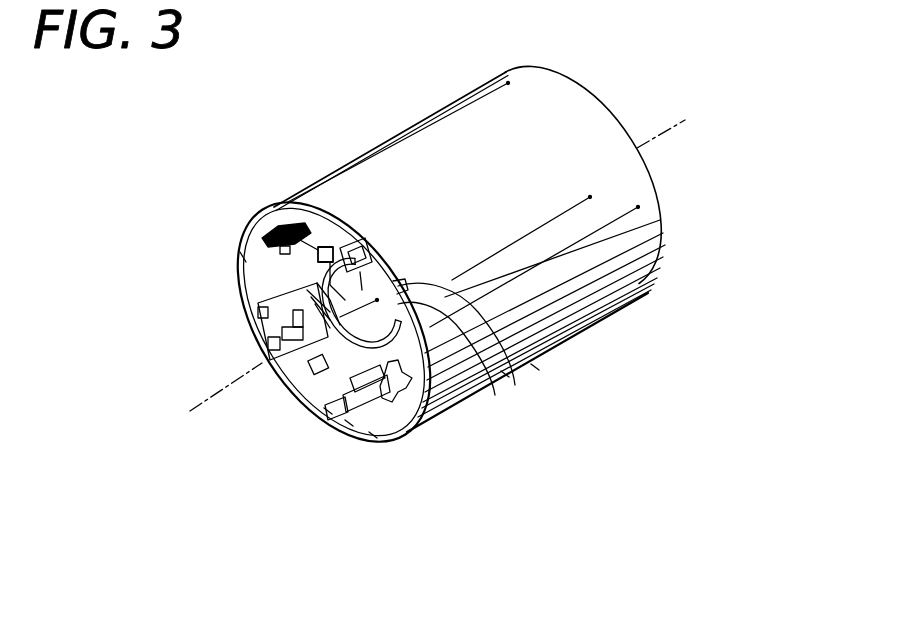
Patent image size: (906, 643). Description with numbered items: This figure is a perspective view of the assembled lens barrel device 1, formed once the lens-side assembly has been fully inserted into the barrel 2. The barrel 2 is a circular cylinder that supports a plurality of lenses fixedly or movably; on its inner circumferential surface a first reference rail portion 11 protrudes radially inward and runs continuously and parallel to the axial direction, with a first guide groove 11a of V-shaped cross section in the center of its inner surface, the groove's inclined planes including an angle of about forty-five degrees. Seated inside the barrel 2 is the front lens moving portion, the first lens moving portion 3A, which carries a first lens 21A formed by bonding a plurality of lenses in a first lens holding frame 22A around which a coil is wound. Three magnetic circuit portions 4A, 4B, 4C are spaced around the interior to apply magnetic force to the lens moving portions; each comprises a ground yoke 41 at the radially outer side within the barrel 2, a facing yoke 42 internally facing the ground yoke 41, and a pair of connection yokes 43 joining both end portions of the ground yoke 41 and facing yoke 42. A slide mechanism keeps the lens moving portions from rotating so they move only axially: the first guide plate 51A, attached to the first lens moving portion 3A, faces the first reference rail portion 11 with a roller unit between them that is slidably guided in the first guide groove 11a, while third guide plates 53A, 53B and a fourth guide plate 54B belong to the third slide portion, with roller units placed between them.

The lens barrel device 1 is at (692, 336).
The barrel 2 is at (596, 323).
The first lens moving portion 3A is at (297, 268).
The first magnetic circuit portion 4A is at (330, 246).
The second magnetic circuit portion 4B is at (445, 400).
The third magnetic circuit portion 4C is at (293, 355).
The first reference rail portion 11 is at (373, 437).
The first guide groove 11a is at (327, 412).
The first lens 21A is at (535, 368).
The first lens holding frame 22A is at (332, 380).
The ground yoke 41 is at (320, 246).
The facing yoke 42 is at (403, 256).
The connection yoke 43 is at (379, 243).
The first guide plate 51A is at (349, 423).
The third guide plate 53A is at (505, 375).
The third guide plate 53B is at (238, 256).
The fourth guide plate 54B is at (292, 194).